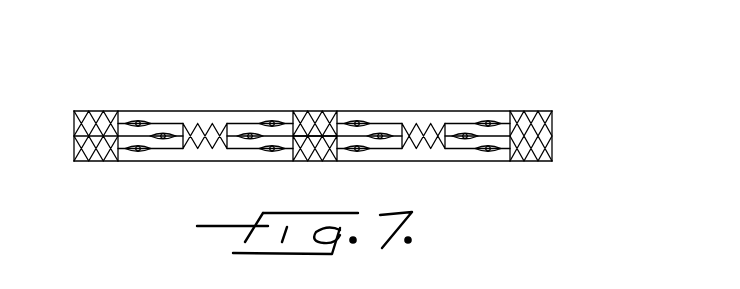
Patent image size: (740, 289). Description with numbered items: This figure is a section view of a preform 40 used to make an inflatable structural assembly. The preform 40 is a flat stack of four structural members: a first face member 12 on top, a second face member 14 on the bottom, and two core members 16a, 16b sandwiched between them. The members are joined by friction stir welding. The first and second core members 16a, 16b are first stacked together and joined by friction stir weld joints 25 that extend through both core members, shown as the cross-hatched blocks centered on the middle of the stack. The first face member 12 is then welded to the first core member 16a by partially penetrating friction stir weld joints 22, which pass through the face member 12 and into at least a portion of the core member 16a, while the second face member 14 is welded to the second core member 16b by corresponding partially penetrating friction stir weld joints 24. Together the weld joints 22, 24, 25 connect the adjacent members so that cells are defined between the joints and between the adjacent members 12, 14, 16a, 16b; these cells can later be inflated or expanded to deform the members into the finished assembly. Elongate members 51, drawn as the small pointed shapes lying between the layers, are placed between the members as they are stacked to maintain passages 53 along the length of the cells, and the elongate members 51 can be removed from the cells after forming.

The preform 40 is at (577, 48).
The first face member 12 is at (126, 112).
The second face member 14 is at (83, 192).
The first core member 16a is at (167, 116).
The second core member 16b is at (138, 197).
The partially penetrating friction stir weld joint 22 is at (342, 70).
The partially penetrating friction stir weld joint 24 is at (328, 185).
The friction stir weld joint 25 is at (240, 72).
The elongate member 51 is at (490, 118).
The passage 53 is at (472, 117).